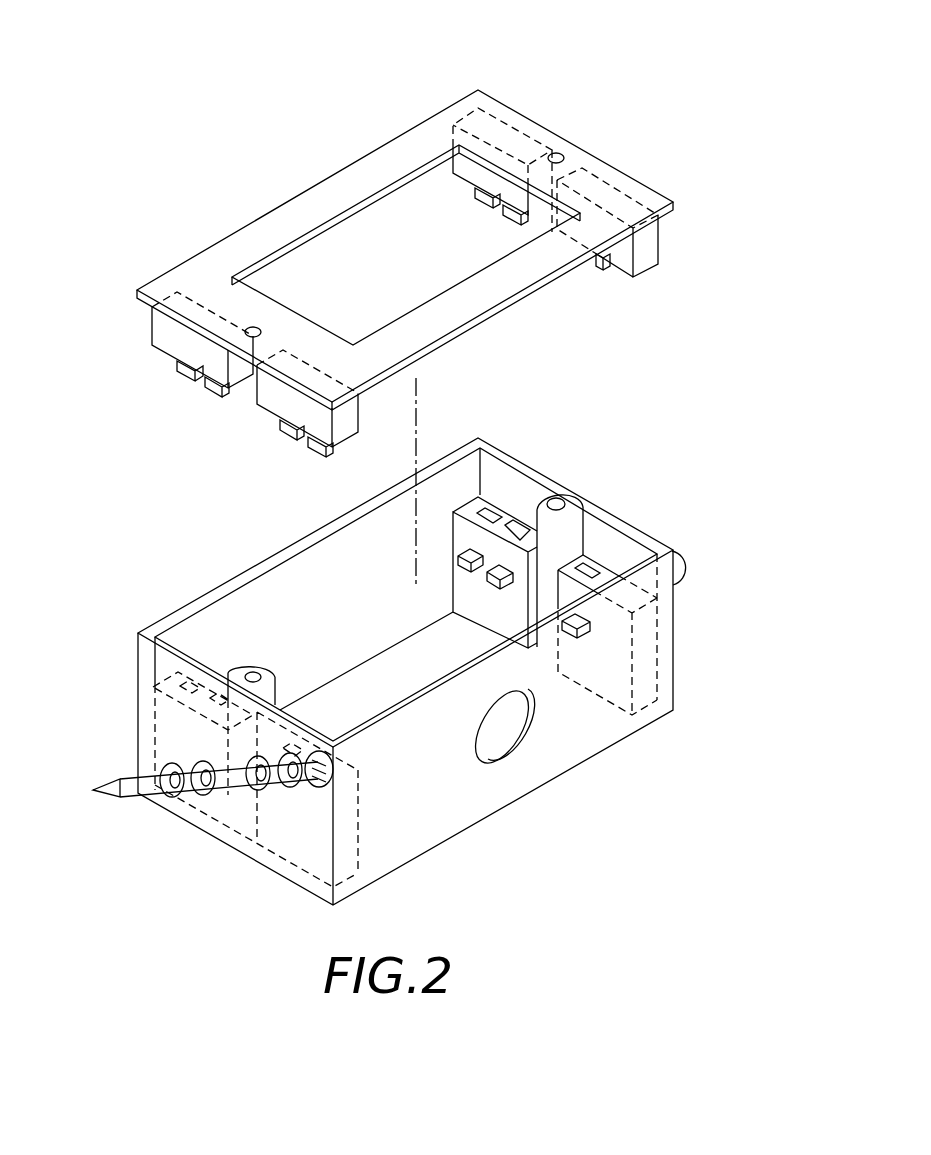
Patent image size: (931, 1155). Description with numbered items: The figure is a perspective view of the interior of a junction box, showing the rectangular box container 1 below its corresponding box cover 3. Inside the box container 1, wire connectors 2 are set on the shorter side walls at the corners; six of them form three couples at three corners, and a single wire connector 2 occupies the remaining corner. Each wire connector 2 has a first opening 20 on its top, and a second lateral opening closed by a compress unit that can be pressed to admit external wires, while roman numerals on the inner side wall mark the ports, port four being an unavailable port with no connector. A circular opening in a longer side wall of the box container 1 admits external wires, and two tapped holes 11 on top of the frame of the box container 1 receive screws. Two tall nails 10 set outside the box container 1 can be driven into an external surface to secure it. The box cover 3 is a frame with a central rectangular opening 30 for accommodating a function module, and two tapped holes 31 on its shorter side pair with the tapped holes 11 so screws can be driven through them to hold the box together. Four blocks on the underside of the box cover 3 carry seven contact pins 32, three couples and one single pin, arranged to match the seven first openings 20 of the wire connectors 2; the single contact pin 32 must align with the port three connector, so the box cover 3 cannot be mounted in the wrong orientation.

The box container 1 is at (673, 670).
The wire connector 2 is at (461, 508).
The box cover 3 is at (400, 147).
The tall nail 10 is at (226, 782).
The tapped hole 11 is at (253, 674).
The first opening 20 is at (490, 513).
The rectangular opening 30 is at (351, 206).
The tapped hole 31 is at (246, 328).
The contact pin 32 is at (178, 372).